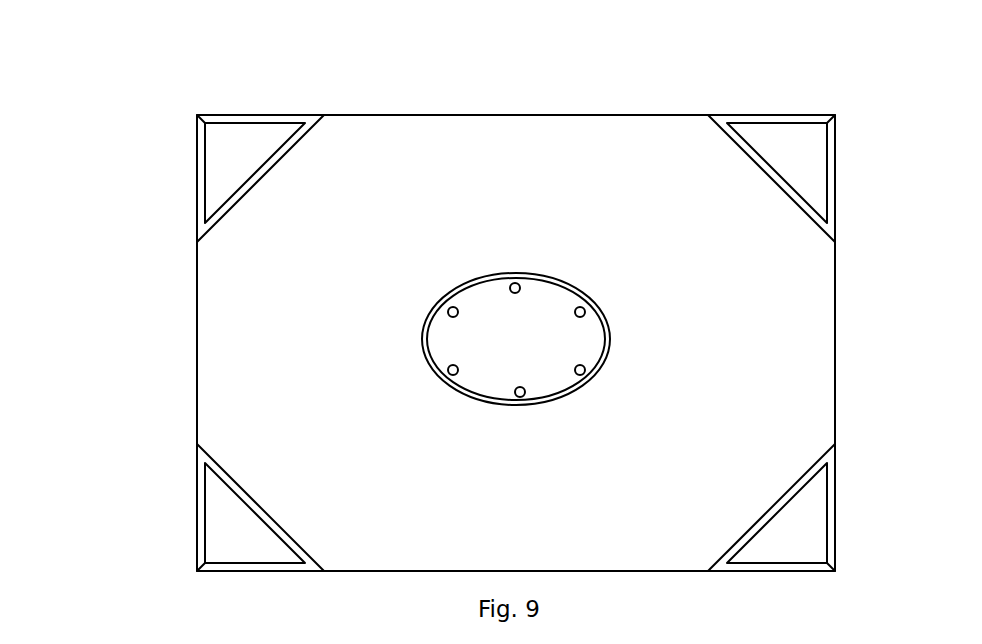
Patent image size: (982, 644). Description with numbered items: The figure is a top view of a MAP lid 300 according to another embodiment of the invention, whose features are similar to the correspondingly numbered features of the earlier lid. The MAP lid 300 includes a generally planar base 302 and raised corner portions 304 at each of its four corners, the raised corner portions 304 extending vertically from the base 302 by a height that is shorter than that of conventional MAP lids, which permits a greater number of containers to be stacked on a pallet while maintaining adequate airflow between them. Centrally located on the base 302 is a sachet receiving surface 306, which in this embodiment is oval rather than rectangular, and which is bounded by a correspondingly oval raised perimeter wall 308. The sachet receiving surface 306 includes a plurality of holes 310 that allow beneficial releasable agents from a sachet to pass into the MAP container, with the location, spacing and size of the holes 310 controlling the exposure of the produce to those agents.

The MAP lid 300 is at (137, 109).
The base 302 is at (657, 238).
The raised corner portions 304 is at (760, 114).
The sachet receiving surface 306 is at (495, 353).
The raised perimeter wall 308 is at (424, 333).
The holes 310 is at (450, 372).